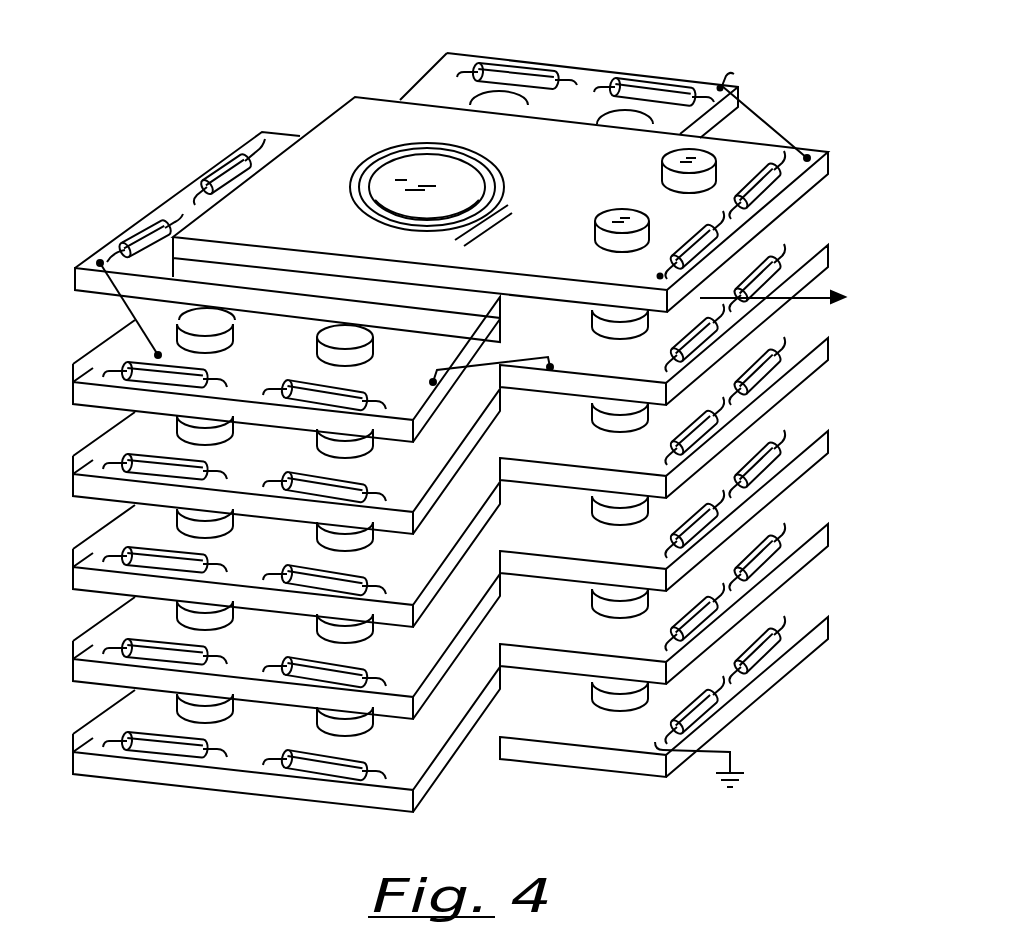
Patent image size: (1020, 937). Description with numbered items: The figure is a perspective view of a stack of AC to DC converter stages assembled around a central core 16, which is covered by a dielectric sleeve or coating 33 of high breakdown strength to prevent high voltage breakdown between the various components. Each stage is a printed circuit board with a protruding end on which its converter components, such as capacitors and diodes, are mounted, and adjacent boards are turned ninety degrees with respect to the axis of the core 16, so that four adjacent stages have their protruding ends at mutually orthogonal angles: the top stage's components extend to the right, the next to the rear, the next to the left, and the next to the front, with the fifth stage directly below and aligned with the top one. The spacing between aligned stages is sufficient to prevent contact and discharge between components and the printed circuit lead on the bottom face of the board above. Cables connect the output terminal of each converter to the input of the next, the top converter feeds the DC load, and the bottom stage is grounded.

The core 16 is at (410, 168).
The dielectric sleeve or coating 33 is at (470, 157).